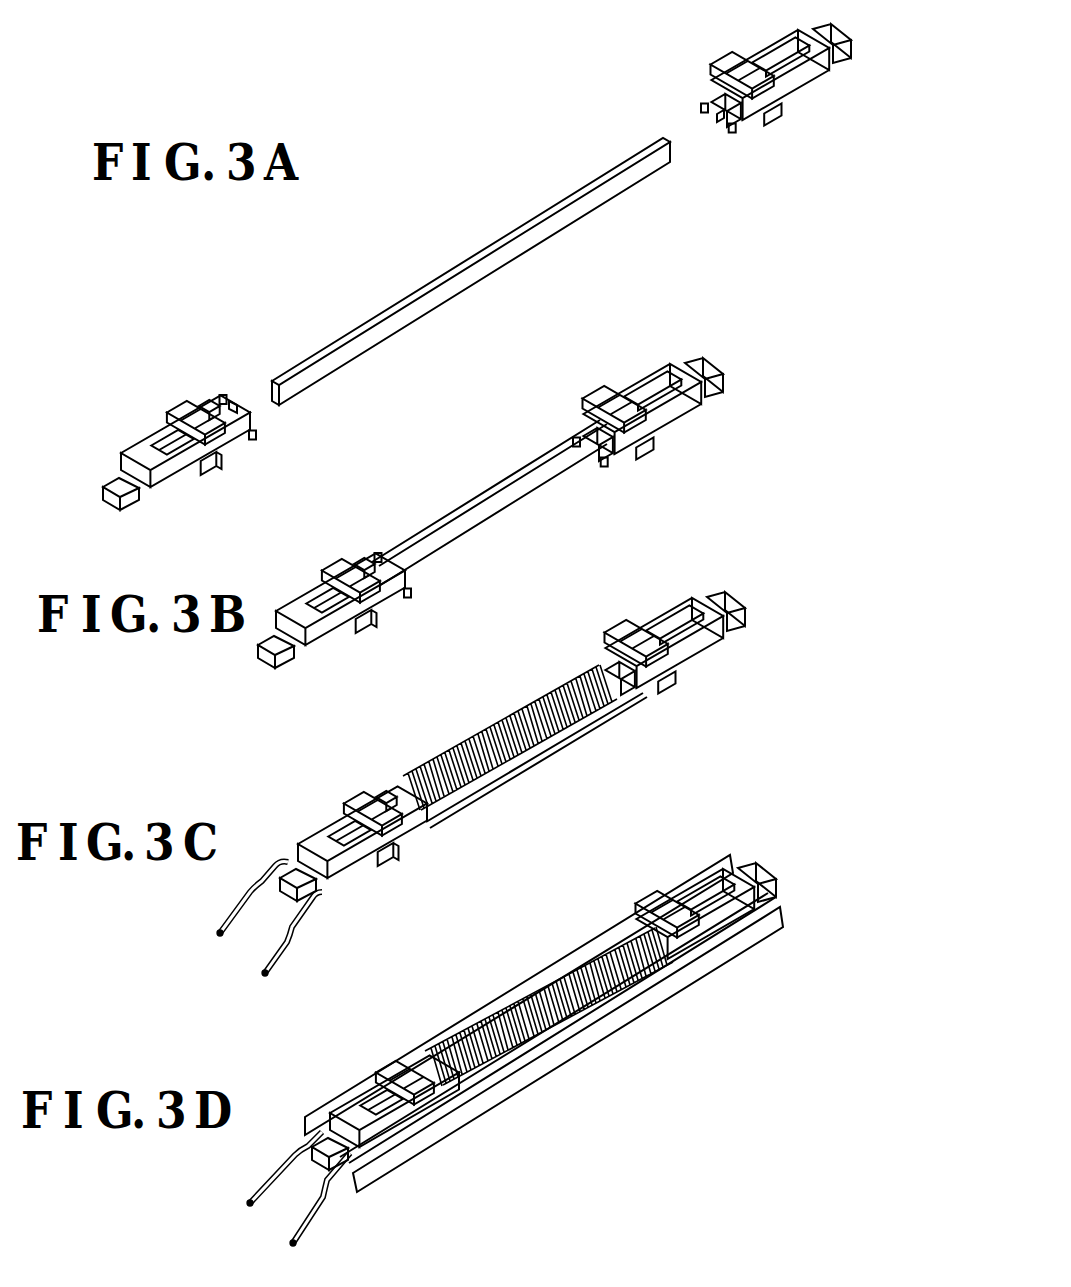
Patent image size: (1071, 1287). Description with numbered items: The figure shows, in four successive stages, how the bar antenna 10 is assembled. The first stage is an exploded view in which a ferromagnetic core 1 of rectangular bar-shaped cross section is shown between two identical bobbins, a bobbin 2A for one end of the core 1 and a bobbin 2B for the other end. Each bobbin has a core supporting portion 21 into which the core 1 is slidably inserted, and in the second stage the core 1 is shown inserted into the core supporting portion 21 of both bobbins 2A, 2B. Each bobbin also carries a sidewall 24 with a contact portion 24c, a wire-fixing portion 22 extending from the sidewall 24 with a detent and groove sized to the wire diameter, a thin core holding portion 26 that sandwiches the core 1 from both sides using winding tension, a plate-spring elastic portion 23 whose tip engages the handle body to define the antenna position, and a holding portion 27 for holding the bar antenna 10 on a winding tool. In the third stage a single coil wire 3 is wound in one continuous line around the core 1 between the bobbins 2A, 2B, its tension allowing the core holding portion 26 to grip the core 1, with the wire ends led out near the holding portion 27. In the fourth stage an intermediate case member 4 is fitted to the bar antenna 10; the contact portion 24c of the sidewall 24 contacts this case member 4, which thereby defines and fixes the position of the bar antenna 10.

In FIG. 3A, the core 1 is at (460, 270).
In FIG. 3B, the core 1 is at (495, 503).
In FIG. 3A, the bobbin 2A is at (168, 512).
In FIG. 3B, the bobbin 2A is at (317, 665).
In FIG. 3C, the bobbin 2A is at (293, 839).
In FIG. 3D, the bobbin 2A is at (320, 1102).
In FIG. 3A, the bobbin 2B is at (812, 110).
In FIG. 3B, the bobbin 2B is at (686, 438).
In FIG. 3C, the bobbin 2B is at (709, 675).
In FIG. 3D, the bobbin 2B is at (742, 860).
In FIG. 3C, the coil wire 3 is at (510, 740).
In FIG. 3D, the coil wire 3 is at (575, 990).
In FIG. 3D, the intermediate case member 4 is at (600, 1022).
In FIG. 3C, the bar antenna 10 is at (743, 587).
In FIG. 3D, the bar antenna 10 is at (777, 859).
In FIG. 3A, the core supporting portion 21 is at (235, 405).
In FIG. 3A, the wire-fixing portion 22 is at (193, 392).
In FIG. 3B, the wire-fixing portion 22 is at (360, 553).
In FIG. 3C, the wire-fixing portion 22 is at (382, 792).
In FIG. 3A, the elastic portion 23 is at (167, 437).
In FIG. 3B, the elastic portion 23 is at (325, 597).
In FIG. 3C, the elastic portion 23 is at (340, 818).
In FIG. 3D, the elastic portion 23 is at (397, 1095).
In FIG. 3A, the sidewall 24 is at (167, 410).
In FIG. 3B, the sidewall 24 is at (325, 572).
In FIG. 3C, the sidewall 24 is at (343, 800).
In FIG. 3D, the sidewall 24 is at (397, 1063).
In FIG. 3A, the contact portion 24c is at (217, 475).
In FIG. 3B, the contact portion 24c is at (370, 627).
In FIG. 3C, the contact portion 24c is at (390, 867).
In FIG. 3A, the core holding portion 26 is at (222, 398).
In FIG. 3B, the core holding portion 26 is at (380, 557).
In FIG. 3A, the holding portion 27 is at (118, 485).
In FIG. 3B, the holding portion 27 is at (270, 633).
In FIG. 3C, the holding portion 27 is at (287, 890).
In FIG. 3D, the holding portion 27 is at (318, 1165).